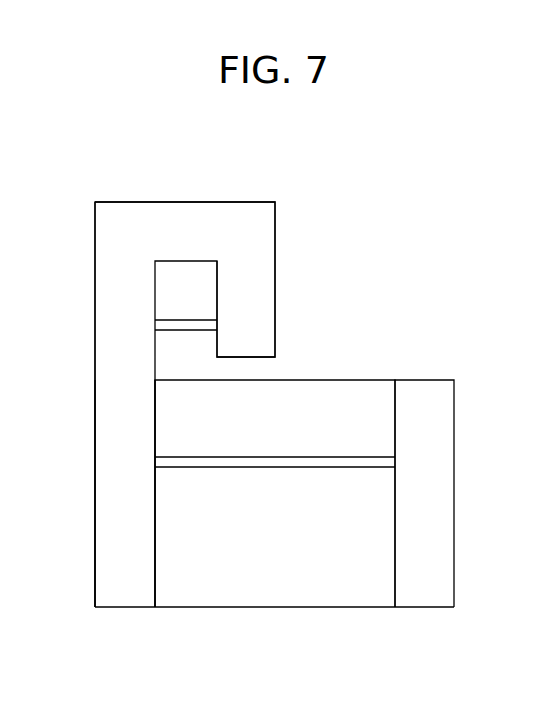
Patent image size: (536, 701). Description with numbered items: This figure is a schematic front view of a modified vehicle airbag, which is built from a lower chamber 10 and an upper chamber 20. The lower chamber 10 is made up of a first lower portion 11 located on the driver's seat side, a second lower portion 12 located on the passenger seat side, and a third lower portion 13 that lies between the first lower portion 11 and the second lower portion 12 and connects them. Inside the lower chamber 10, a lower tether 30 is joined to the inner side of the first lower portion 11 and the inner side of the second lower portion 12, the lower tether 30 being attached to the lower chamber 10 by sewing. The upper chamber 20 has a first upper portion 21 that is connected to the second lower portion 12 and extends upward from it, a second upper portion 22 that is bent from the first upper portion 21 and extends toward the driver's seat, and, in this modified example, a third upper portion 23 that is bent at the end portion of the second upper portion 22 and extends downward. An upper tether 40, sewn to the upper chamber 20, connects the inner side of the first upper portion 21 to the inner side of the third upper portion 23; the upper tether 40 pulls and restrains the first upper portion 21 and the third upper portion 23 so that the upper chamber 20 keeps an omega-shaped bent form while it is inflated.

The lower chamber 10 is at (218, 630).
The first lower portion 11 is at (432, 494).
The second lower portion 12 is at (122, 498).
The third lower portion 13 is at (327, 587).
The upper chamber 20 is at (256, 164).
The first upper portion 21 is at (118, 312).
The second upper portion 22 is at (162, 202).
The third upper portion 23 is at (253, 336).
The lower tether 30 is at (367, 462).
The upper tether 40 is at (196, 318).